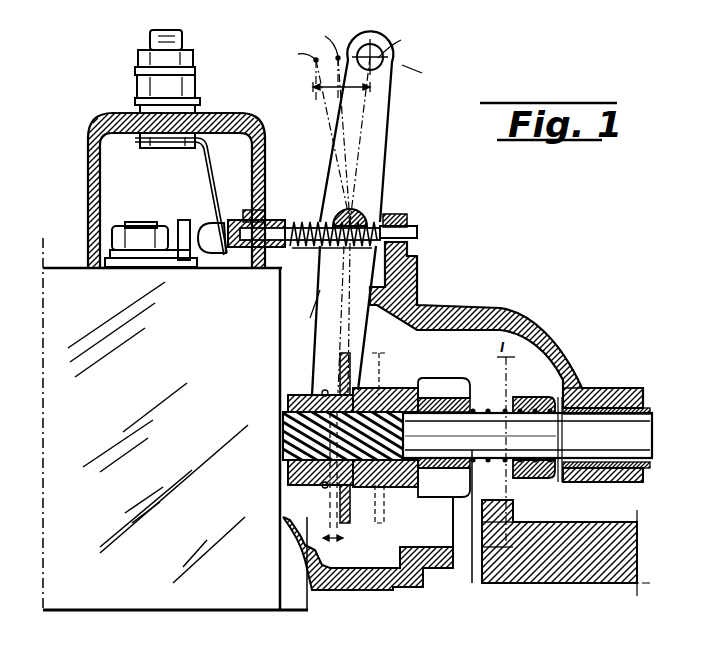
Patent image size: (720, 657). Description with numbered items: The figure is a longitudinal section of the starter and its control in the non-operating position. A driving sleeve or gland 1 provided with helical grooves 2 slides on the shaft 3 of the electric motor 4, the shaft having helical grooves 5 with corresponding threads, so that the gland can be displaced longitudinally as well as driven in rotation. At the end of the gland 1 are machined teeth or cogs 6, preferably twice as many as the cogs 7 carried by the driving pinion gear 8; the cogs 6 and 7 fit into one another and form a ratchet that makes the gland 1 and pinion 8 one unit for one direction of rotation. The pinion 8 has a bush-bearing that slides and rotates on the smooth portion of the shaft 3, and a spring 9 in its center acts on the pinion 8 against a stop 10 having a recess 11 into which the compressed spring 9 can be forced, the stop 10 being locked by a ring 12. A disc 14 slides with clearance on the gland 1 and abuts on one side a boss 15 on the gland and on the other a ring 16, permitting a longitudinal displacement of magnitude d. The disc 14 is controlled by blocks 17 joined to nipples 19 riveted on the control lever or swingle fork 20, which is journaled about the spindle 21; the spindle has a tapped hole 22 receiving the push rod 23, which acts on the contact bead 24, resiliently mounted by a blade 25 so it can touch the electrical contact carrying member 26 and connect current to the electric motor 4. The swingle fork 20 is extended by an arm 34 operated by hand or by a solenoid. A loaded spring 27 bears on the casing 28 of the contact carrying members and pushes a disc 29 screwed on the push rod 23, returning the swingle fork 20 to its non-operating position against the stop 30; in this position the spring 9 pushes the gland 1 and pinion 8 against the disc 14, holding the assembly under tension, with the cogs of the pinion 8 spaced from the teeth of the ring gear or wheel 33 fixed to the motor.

The driving sleeve or gland 1 is at (395, 398).
The helical grooves 2 is at (316, 393).
The shaft 3 is at (453, 435).
The electric motor 4 is at (175, 425).
The helical grooves 5 is at (290, 402).
The teeth or cogs 6 is at (410, 488).
The cogs 7 is at (422, 402).
The driving pinion gear 8 is at (434, 490).
The spring 9 is at (540, 398).
The stop 10 is at (535, 480).
The recess 11 is at (523, 398).
The ring 12 is at (560, 470).
The disc 14 is at (347, 522).
The boss 15 is at (351, 487).
The ring 16 is at (324, 488).
The blocks 17 is at (284, 434).
The nipples 19 is at (286, 455).
The control lever or swingle fork 20 is at (322, 323).
The spindle 21 is at (362, 220).
The tapped hole 22 is at (327, 295).
The push rod 23 is at (312, 214).
The contact bead 24 is at (213, 246).
The blade 25 is at (213, 167).
The electrical contact carrying member 26 is at (180, 227).
The loaded spring 27 is at (273, 212).
The casing 28 is at (237, 118).
The disc 29 is at (303, 262).
The stop 30 is at (373, 293).
The ring gear or wheel 33 is at (479, 586).
The arm 34 is at (372, 123).